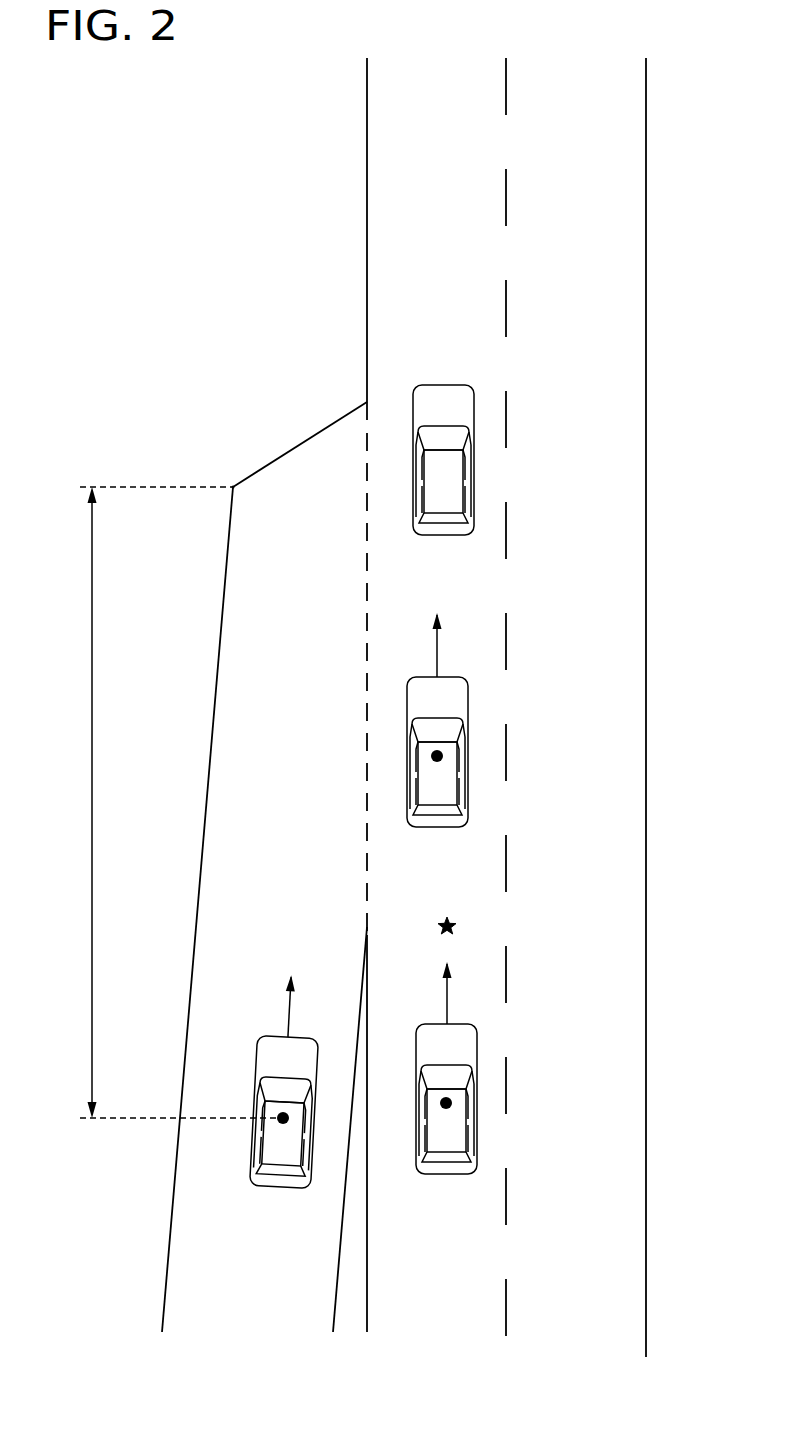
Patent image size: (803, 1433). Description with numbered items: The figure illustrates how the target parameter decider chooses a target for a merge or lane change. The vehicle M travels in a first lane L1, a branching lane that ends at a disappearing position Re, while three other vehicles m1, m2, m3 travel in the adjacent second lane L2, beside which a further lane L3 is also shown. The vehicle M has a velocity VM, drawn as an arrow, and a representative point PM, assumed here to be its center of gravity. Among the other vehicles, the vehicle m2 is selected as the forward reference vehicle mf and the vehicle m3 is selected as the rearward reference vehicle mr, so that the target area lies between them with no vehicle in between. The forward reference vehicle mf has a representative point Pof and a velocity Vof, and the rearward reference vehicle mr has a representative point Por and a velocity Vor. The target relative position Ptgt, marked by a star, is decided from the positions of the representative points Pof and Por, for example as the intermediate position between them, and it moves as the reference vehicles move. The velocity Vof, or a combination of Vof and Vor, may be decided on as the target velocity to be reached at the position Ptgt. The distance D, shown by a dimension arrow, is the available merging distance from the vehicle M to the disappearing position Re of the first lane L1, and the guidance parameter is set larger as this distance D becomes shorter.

The first lane L1 is at (265, 1335).
The second lane L2 is at (452, 1335).
The third lane L3 is at (592, 1335).
The disappearing position Re is at (233, 487).
The distance (available merging distance) D is at (172, 802).
The vehicle M is at (258, 1062).
The velocity of the vehicle VM is at (290, 1010).
The representative point of the vehicle PM is at (283, 1122).
The other vehicle m1 is at (474, 458).
The other vehicle m2 is at (511, 752).
The forward reference vehicle mf is at (467, 742).
The velocity of the forward reference vehicle Vof is at (437, 648).
The representative point of the forward reference vehicle Pof is at (443, 756).
The target relative position Ptgt is at (452, 921).
The other vehicle m3 is at (520, 1099).
The rearward reference vehicle mr is at (477, 1089).
The velocity of the rearward reference vehicle Vor is at (447, 997).
The representative point of the rearward reference vehicle Por is at (452, 1104).